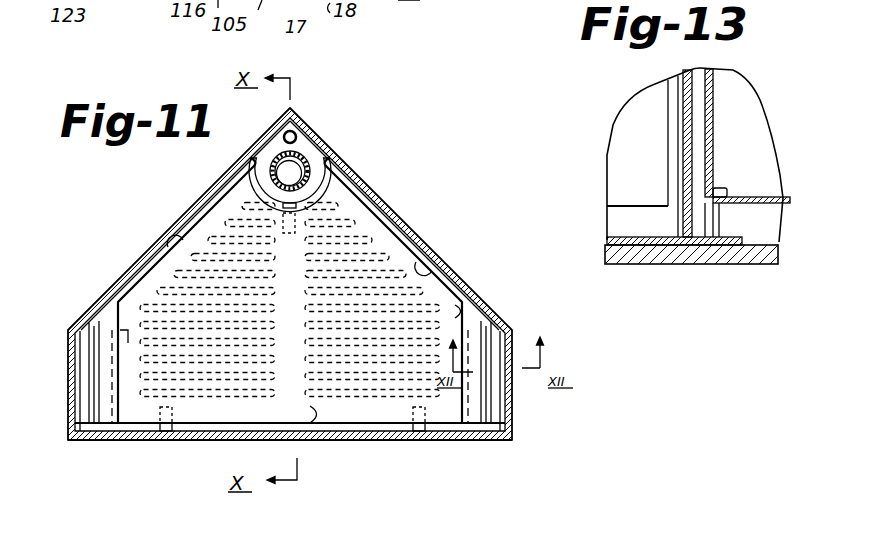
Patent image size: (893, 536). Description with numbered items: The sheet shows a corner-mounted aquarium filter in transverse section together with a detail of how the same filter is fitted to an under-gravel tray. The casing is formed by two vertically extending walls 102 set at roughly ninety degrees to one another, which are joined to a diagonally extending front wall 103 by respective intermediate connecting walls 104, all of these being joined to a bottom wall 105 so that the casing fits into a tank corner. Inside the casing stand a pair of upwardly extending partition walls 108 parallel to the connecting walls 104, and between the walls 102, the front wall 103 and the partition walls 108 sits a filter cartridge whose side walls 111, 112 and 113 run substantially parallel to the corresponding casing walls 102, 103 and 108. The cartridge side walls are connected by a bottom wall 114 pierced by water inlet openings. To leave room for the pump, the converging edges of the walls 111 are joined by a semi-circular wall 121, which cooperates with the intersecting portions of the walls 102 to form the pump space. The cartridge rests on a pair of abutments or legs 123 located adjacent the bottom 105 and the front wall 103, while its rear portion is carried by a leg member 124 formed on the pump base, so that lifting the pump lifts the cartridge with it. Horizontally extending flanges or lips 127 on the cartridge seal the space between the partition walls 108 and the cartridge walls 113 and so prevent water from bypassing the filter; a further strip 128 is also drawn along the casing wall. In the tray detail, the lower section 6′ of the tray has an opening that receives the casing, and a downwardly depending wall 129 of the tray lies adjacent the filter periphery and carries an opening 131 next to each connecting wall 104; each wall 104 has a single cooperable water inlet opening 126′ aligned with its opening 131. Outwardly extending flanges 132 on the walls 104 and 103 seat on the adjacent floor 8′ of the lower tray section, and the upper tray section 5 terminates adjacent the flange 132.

In FIG. 11, the vertically extending walls 102 is at (186, 208).
In FIG. 13, the vertically extending walls 102 is at (647, 223).
In FIG. 11, the intermediate connecting walls 104 is at (71, 366).
In FIG. 13, the intermediate connecting walls 104 is at (714, 98).
In FIG. 11, the bottom wall 105 is at (386, 191).
In FIG. 13, the bottom wall 105 is at (610, 240).
In FIG. 11, the partition walls 108 is at (92, 340).
In FIG. 13, the partition walls 108 is at (688, 122).
In FIG. 11, the side walls 111 is at (166, 246).
In FIG. 11, the side wall 112 is at (301, 410).
In FIG. 11, the side walls 113 is at (484, 290).
In FIG. 11, the semi-circular wall 121 is at (310, 158).
In FIG. 11, the abutments or legs 123 is at (174, 425).
In FIG. 11, the leg member 124 is at (298, 238).
In FIG. 11, the flanges or lips 127 is at (503, 341).
In FIG. 11, the gasket strip 128 is at (107, 401).
In FIG. 11, the front wall 103 is at (350, 434).
In FIG. 13, the upper section 5 is at (770, 180).
In FIG. 13, the bottom wall 114 is at (600, 179).
In FIG. 13, the outwardly extending flanges 132 is at (721, 188).
In FIG. 13, the downwardly depending wall 129 is at (721, 217).
In FIG. 13, the floor 8′ is at (786, 210).
In FIG. 13, the lower section 6′ is at (766, 231).
In FIG. 13, the water inlet opening 126′ is at (700, 220).
In FIG. 13, the opening 131 is at (720, 228).